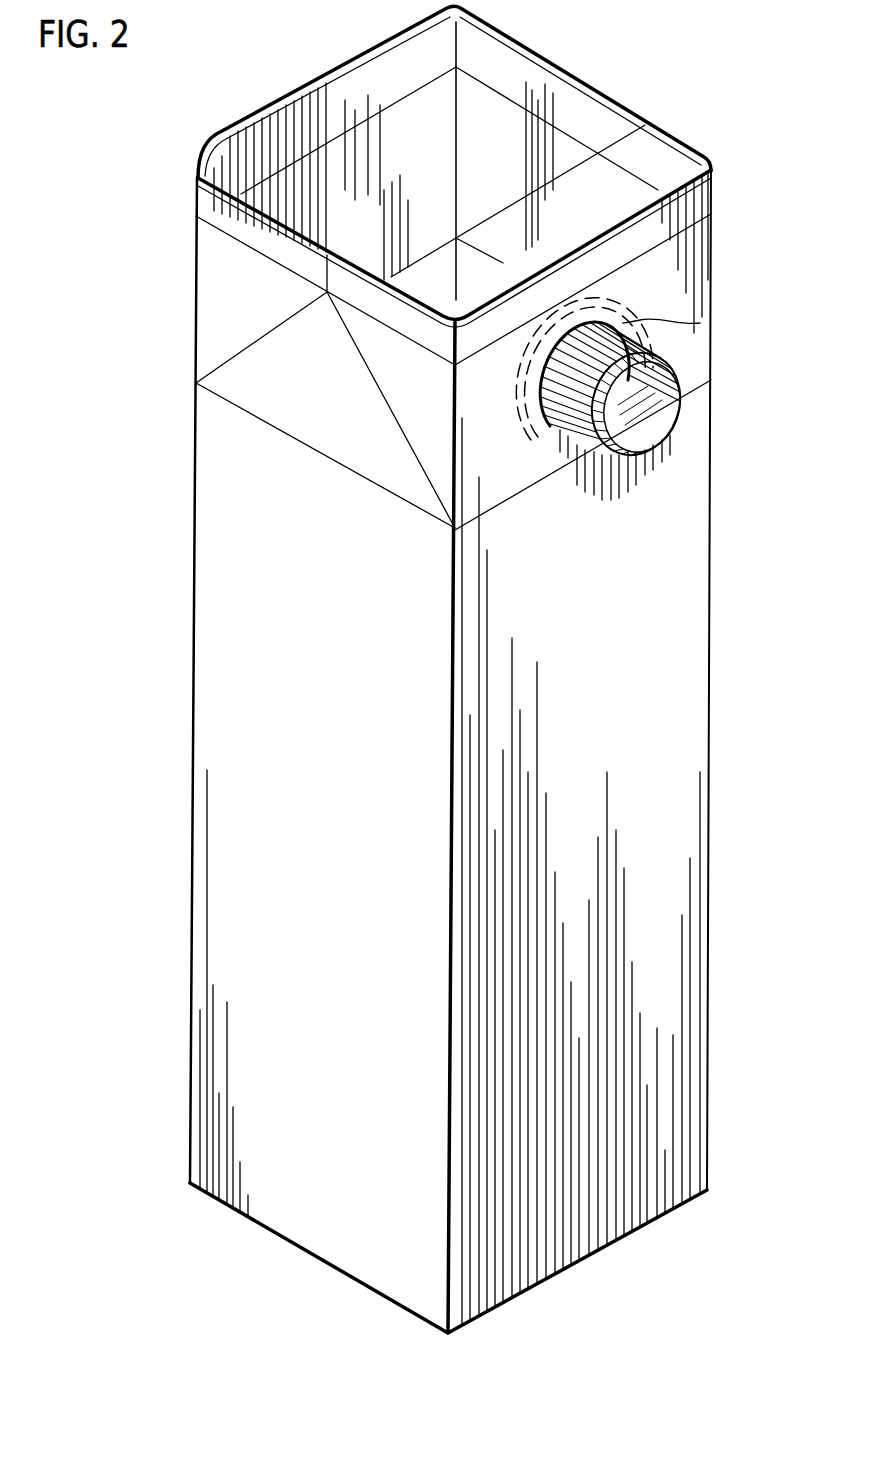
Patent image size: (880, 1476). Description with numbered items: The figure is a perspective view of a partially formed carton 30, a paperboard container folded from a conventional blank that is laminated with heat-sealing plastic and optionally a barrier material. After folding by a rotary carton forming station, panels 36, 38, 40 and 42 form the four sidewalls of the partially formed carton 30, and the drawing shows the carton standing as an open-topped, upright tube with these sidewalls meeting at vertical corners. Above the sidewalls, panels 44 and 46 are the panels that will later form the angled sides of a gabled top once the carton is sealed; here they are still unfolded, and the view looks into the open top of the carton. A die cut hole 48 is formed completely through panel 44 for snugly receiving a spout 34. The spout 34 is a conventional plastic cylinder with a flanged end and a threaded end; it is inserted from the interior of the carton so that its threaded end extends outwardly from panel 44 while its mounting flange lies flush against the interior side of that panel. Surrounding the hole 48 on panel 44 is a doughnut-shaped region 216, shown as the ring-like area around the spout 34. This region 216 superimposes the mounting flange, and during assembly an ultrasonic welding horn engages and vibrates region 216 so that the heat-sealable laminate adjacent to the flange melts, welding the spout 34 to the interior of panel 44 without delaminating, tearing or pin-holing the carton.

The partially formed carton 30 is at (742, 603).
The spout 34 is at (644, 428).
The panel 36 is at (336, 641).
The panel 38 is at (591, 636).
The panel 40 is at (480, 267).
The panel 42 is at (437, 272).
The panel 44 is at (658, 304).
The panel 46 is at (440, 115).
The die cut hole 48 is at (604, 305).
The doughnut-shaped region 216 is at (705, 322).